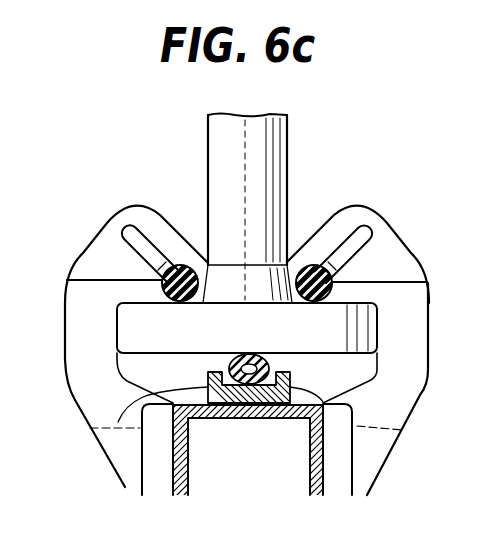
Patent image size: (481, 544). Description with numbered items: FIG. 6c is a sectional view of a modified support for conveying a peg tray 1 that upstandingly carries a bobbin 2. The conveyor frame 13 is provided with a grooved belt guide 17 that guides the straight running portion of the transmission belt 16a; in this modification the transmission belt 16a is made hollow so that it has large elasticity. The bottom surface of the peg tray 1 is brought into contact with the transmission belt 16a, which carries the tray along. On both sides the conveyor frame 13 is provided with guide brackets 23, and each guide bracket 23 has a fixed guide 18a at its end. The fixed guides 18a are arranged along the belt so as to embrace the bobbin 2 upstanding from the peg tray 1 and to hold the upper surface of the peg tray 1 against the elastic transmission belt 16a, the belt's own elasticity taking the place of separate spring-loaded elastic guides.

The bobbin 2 is at (287, 137).
The fixed guide 18a is at (178, 262).
The peg tray 1 is at (140, 318).
The guide bracket 23 is at (87, 372).
The transmission belt 16a is at (282, 367).
The conveyor frame 13 is at (322, 470).
The grooved belt guide 17 is at (118, 422).